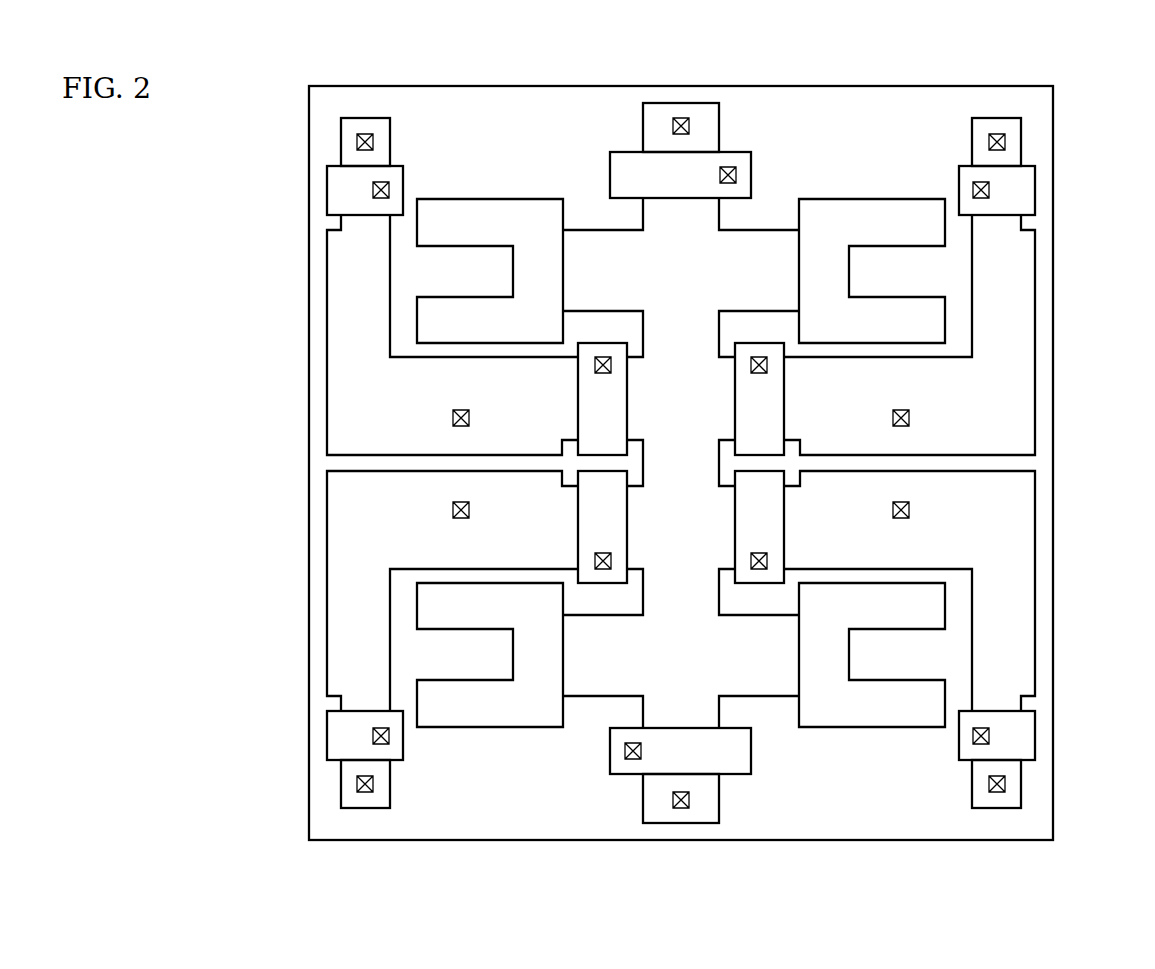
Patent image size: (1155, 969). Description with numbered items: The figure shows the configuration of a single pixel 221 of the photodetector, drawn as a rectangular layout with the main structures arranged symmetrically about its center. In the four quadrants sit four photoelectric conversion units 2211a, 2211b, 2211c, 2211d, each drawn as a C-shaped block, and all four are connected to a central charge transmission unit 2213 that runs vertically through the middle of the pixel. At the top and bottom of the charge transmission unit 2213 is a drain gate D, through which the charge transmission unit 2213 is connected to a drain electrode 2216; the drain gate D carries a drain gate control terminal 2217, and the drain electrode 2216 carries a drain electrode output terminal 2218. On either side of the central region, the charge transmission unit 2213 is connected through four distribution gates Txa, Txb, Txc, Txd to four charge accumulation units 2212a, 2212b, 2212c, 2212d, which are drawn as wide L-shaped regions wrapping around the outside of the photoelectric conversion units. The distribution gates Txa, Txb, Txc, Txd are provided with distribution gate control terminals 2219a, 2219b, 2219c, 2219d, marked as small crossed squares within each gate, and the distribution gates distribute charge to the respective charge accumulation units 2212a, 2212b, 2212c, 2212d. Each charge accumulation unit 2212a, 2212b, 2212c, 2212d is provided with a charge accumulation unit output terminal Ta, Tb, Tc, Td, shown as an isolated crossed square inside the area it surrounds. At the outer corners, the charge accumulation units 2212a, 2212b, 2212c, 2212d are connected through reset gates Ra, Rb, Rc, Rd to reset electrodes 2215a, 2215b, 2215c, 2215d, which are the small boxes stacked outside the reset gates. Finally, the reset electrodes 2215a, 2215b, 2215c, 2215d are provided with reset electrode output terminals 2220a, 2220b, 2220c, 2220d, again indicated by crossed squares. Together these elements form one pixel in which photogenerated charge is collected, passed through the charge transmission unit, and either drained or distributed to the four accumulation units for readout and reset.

The pixel 221 is at (995, 86).
The photoelectric conversion unit 2211a is at (478, 199).
The photoelectric conversion unit 2211b is at (882, 199).
The photoelectric conversion unit 2211c is at (478, 727).
The photoelectric conversion unit 2211d is at (882, 727).
The charge accumulation unit 2212a is at (327, 335).
The charge accumulation unit 2212b is at (1035, 335).
The charge accumulation unit 2212c is at (327, 588).
The charge accumulation unit 2212d is at (1035, 588).
The charge transmission unit 2213 is at (779, 230).
The reset electrode 2215a is at (340, 152).
The reset electrode 2215b is at (1022, 152).
The reset electrode 2215c is at (340, 772).
The reset electrode 2215d is at (1022, 772).
The drain electrode 2216 is at (653, 102).
The drain gate control terminal 2217 is at (728, 167).
The drain electrode output terminal 2218 is at (682, 118).
The distribution gate control terminal 2219a is at (595, 366).
The distribution gate control terminal 2219b is at (769, 366).
The distribution gate control terminal 2219c is at (595, 561).
The distribution gate control terminal 2219d is at (769, 560).
The reset electrode output terminal 2220a is at (358, 137).
The reset electrode output terminal 2220b is at (1004, 137).
The reset electrode output terminal 2220c is at (358, 788).
The reset electrode output terminal 2220d is at (1004, 788).
The drain gate D is at (630, 150).
The reset gate Ra is at (327, 192).
The reset gate Rb is at (1035, 192).
The reset gate Rc is at (327, 733).
The reset gate Rd is at (1035, 733).
The charge accumulation unit output terminal Ta is at (453, 418).
The charge accumulation unit output terminal Tb is at (910, 418).
The charge accumulation unit output terminal Tc is at (453, 510).
The charge accumulation unit output terminal Td is at (910, 510).
The distribution gate Txa is at (578, 418).
The distribution gate Txb is at (785, 418).
The distribution gate Txc is at (578, 510).
The distribution gate Txd is at (785, 510).